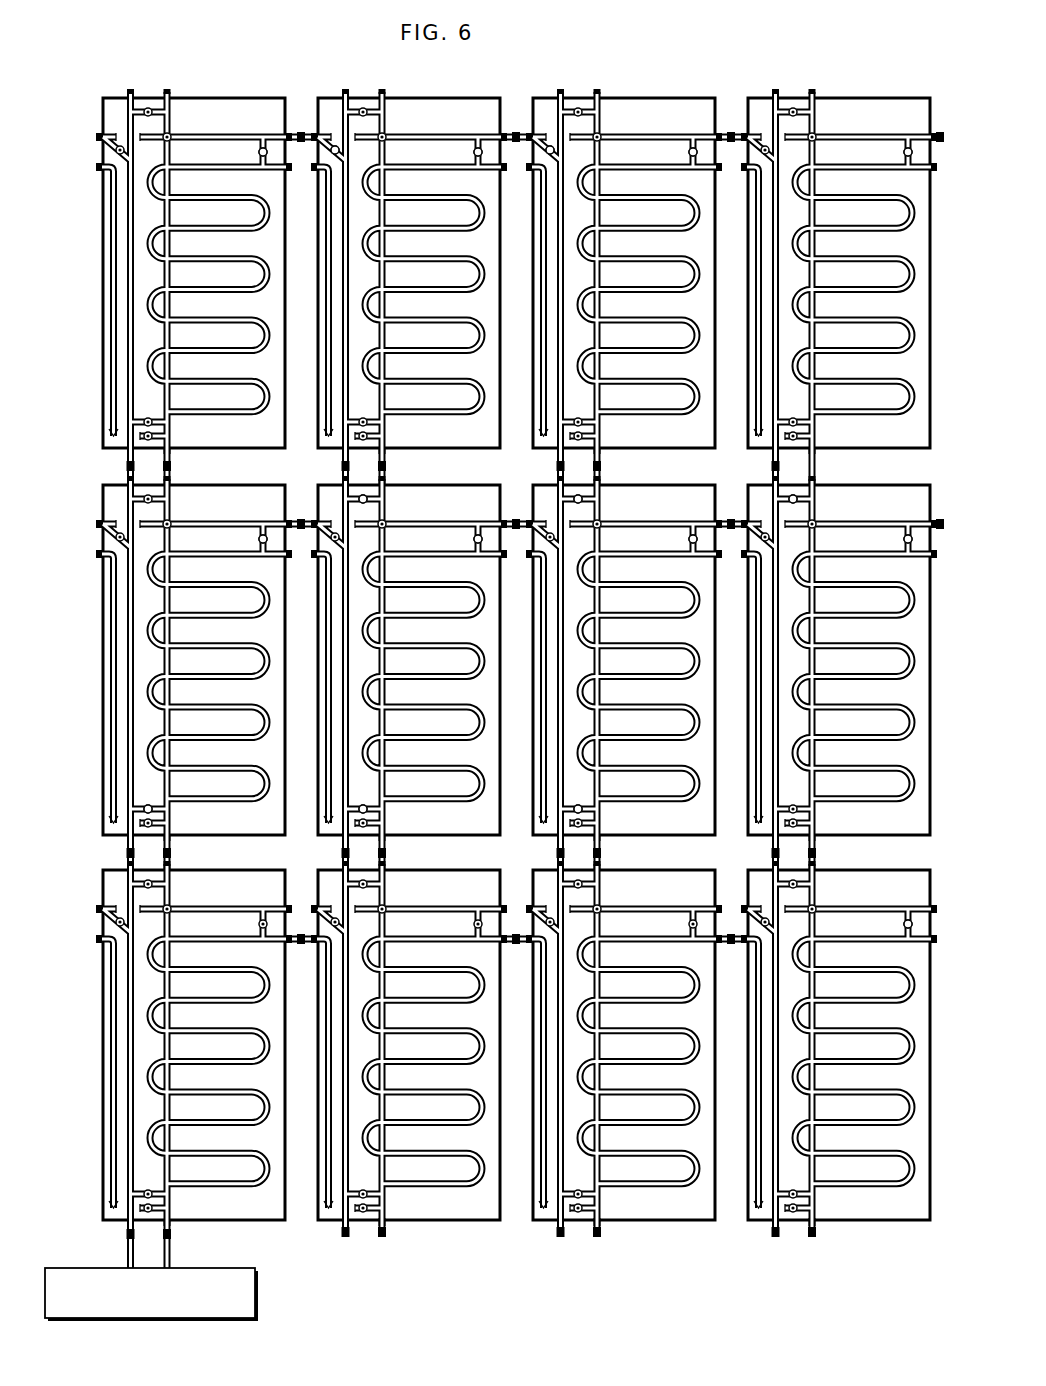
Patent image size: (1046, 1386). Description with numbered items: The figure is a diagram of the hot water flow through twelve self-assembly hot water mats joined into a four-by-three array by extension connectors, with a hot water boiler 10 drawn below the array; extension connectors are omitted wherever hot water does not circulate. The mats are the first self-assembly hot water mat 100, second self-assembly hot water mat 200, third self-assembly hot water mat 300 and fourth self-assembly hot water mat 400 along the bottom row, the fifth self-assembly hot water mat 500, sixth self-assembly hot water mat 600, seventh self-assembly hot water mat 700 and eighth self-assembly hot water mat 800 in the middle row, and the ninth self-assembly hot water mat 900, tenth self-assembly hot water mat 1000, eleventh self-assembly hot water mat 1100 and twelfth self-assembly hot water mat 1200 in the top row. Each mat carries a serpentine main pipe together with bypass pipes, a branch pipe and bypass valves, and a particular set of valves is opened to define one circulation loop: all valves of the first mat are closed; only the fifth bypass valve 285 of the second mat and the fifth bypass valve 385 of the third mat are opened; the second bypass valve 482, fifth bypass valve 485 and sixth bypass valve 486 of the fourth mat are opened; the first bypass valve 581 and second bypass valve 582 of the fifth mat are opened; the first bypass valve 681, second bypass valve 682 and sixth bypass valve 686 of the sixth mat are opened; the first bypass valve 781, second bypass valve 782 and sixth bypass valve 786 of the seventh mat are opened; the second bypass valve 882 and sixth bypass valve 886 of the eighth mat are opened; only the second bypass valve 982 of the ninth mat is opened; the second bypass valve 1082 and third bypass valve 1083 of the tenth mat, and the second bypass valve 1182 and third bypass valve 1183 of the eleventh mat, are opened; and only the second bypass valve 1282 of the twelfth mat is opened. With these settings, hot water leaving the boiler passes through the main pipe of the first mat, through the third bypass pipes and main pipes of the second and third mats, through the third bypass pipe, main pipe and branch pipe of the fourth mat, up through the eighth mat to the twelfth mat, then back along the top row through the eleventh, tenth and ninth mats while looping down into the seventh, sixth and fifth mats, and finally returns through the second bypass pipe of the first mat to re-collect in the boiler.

The hot water boiler 10 is at (262, 1295).
The first self-assembly hot water mat 100 is at (210, 870).
The second self-assembly hot water mat 200 is at (424, 870).
The third self-assembly hot water mat 300 is at (640, 870).
The fourth self-assembly hot water mat 400 is at (900, 870).
The fifth self-assembly hot water mat 500 is at (210, 485).
The sixth self-assembly hot water mat 600 is at (424, 485).
The seventh self-assembly hot water mat 700 is at (640, 485).
The eighth self-assembly hot water mat 800 is at (854, 485).
The ninth self-assembly hot water mat 900 is at (210, 98).
The tenth self-assembly hot water mat 1000 is at (424, 98).
The eleventh self-assembly hot water mat 1100 is at (640, 98).
The twelfth self-assembly hot water mat 1200 is at (854, 98).
The fifth bypass valve 285 is at (363, 1242).
The fifth bypass valve 385 is at (578, 1242).
The fifth bypass valve 485 is at (793, 1242).
The second bypass valve 482 is at (904, 924).
The sixth bypass valve 486 is at (817, 858).
The first bypass valve 581 is at (152, 806).
The second bypass valve 582 is at (259, 539).
The first bypass valve 681 is at (367, 806).
The second bypass valve 682 is at (474, 539).
The sixth bypass valve 686 is at (388, 498).
The first bypass valve 781 is at (582, 806).
The second bypass valve 782 is at (689, 539).
The sixth bypass valve 786 is at (603, 498).
The second bypass valve 882 is at (904, 539).
The sixth bypass valve 886 is at (818, 498).
The second bypass valve 982 is at (259, 152).
The second bypass valve 1082 is at (474, 152).
The third bypass valve 1083 is at (333, 146).
The second bypass valve 1182 is at (689, 152).
The third bypass valve 1183 is at (550, 146).
The second bypass valve 1282 is at (904, 152).